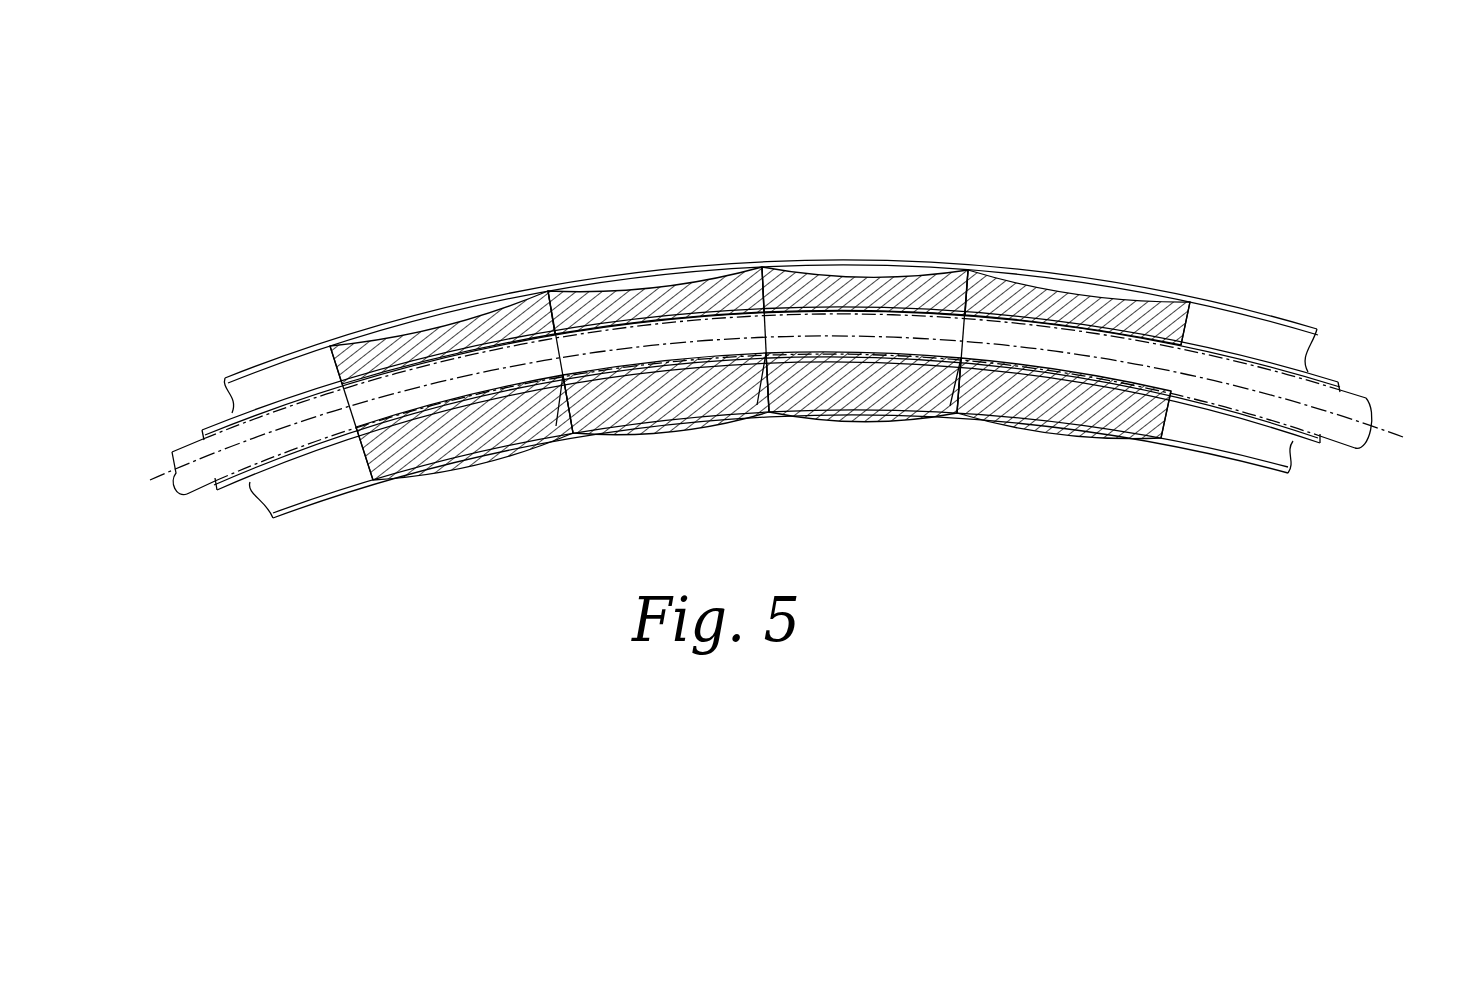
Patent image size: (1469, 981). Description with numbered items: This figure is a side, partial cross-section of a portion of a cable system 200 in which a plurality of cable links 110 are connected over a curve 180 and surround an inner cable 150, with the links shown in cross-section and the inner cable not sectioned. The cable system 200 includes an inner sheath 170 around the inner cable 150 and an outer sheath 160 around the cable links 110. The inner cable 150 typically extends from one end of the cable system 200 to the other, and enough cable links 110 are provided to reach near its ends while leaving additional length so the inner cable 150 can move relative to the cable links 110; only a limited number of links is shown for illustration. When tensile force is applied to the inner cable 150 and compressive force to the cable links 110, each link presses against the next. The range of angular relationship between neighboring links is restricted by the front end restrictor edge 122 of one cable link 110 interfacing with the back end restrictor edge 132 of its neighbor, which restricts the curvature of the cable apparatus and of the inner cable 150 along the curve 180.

The cable system 200 is at (325, 173).
The cable link 110 is at (500, 320).
The front end restrictor edge 122 is at (560, 425).
The back end restrictor edge 132 is at (605, 425).
The inner cable 150 is at (190, 497).
The outer sheath 160 is at (262, 362).
The inner sheath 170 is at (215, 420).
The curve 180 is at (160, 465).